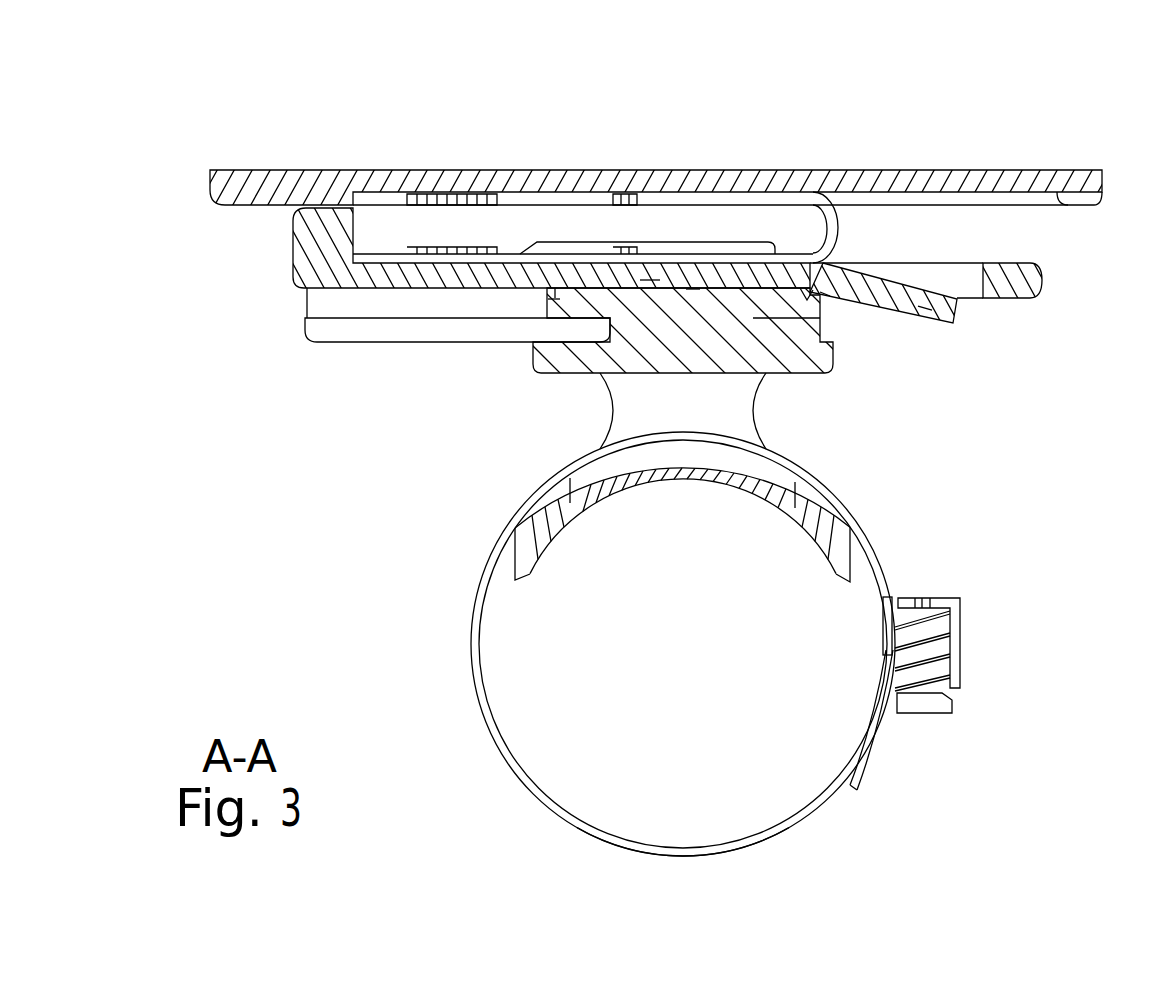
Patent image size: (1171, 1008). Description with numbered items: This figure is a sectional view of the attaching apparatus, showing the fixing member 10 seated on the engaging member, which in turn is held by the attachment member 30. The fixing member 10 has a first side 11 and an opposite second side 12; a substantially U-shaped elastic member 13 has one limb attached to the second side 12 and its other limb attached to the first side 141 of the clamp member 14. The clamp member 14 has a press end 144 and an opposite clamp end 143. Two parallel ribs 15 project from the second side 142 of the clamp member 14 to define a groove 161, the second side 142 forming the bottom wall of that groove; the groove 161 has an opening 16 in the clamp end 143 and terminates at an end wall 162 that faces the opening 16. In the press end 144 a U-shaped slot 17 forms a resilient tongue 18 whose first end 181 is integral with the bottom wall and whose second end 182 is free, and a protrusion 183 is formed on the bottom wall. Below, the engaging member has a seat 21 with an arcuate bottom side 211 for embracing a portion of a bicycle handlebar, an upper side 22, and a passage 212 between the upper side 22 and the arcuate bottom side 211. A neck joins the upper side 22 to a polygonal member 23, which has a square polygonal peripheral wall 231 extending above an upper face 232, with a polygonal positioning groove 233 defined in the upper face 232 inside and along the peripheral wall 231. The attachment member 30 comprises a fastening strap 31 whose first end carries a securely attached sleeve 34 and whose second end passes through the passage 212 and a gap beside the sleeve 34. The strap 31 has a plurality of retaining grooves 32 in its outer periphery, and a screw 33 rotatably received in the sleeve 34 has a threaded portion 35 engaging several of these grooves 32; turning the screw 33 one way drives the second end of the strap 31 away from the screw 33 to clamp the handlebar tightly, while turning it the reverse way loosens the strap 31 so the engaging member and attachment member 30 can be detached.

The fixing member 10 is at (990, 150).
The first side 11 is at (1078, 170).
The second side 12 is at (1068, 202).
The U-shaped elastic member 13 is at (740, 194).
The clamp member 14 is at (1060, 271).
The first side 141 is at (595, 262).
The second side 142 is at (482, 283).
The clamp end 143 is at (310, 248).
The press end 144 is at (1035, 290).
The ribs 15 is at (425, 335).
The opening 16 is at (302, 300).
The groove 161 is at (361, 305).
The end wall 162 is at (825, 295).
The U-shaped slot 17 is at (928, 272).
The resilient tongue 18 is at (964, 308).
The first end 181 is at (654, 280).
The second end 182 is at (925, 302).
The protrusion 183 is at (807, 290).
The seat 21 is at (603, 433).
The arcuate bottom side 211 is at (838, 542).
The passage 212 is at (748, 434).
The upper side 22 is at (821, 365).
The polygonal member 23 is at (546, 318).
The polygonal peripheral wall 231 is at (516, 176).
The upper face 232 is at (693, 287).
The positioning groove 233 is at (554, 297).
The attachment member 30 is at (915, 571).
The fastening strap 31 is at (750, 848).
The retaining grooves 32 is at (470, 622).
The screw 33 is at (922, 713).
The sleeve 34 is at (960, 620).
The threaded portion 35 is at (935, 650).